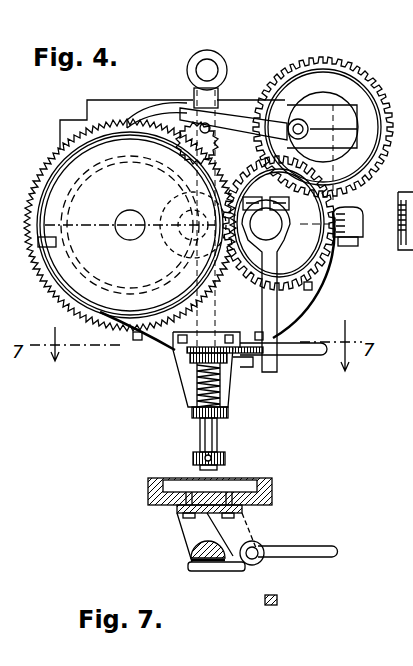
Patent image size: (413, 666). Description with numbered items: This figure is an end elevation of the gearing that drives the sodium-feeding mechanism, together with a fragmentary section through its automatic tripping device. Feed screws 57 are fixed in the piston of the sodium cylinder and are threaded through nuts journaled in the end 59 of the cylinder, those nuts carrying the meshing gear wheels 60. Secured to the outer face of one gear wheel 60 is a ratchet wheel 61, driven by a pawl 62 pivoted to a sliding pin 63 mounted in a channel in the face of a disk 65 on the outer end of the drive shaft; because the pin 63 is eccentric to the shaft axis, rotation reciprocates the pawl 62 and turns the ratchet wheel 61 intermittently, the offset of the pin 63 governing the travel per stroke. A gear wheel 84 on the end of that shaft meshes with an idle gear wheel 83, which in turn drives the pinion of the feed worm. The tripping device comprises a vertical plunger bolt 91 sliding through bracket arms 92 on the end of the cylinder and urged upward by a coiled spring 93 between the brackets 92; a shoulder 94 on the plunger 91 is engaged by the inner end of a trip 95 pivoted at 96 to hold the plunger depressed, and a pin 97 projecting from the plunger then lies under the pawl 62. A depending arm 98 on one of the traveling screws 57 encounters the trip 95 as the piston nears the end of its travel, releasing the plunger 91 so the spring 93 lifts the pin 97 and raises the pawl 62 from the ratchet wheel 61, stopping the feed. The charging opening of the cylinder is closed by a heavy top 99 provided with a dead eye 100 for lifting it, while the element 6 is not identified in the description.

In FIG. 4, the shaft 6 is at (362, 132).
In FIG. 4, the feed screws 57 is at (130, 210).
In FIG. 4, the end of the cylinder 59 is at (320, 281).
In FIG. 4, the gear wheels 60 is at (328, 252).
In FIG. 4, the ratchet wheel 61 is at (58, 155).
In FIG. 4, the pawl 62 is at (152, 104).
In FIG. 4, the sliding pin 63 is at (300, 119).
In FIG. 4, the disk 65 is at (334, 103).
In FIG. 4, the idle gear wheel 83 is at (228, 108).
In FIG. 4, the gear wheel 84 is at (376, 95).
In FIG. 4, the plunger bolt 91 is at (211, 307).
In FIG. 7, the plunger bolt 91 is at (196, 552).
In FIG. 4, the bracket arms 92 is at (190, 357).
In FIG. 7, the bracket arms 92 is at (188, 531).
In FIG. 4, the coiled spring 93 is at (197, 396).
In FIG. 7, the shoulder 94 is at (208, 571).
In FIG. 4, the trip 95 is at (291, 354).
In FIG. 7, the trip 95 is at (241, 566).
In FIG. 4, the pivot 96 is at (245, 343).
In FIG. 7, the pivot 96 is at (259, 549).
In FIG. 4, the pin 97 is at (120, 175).
In FIG. 4, the depending arm 98 is at (300, 320).
In FIG. 7, the depending arm 98 is at (278, 600).
In FIG. 4, the top 99 is at (104, 100).
In FIG. 4, the dead eye 100 is at (208, 51).